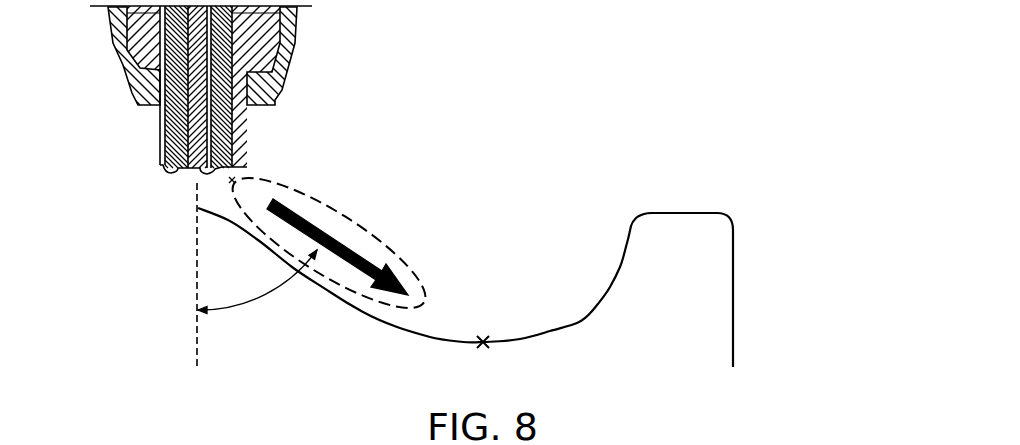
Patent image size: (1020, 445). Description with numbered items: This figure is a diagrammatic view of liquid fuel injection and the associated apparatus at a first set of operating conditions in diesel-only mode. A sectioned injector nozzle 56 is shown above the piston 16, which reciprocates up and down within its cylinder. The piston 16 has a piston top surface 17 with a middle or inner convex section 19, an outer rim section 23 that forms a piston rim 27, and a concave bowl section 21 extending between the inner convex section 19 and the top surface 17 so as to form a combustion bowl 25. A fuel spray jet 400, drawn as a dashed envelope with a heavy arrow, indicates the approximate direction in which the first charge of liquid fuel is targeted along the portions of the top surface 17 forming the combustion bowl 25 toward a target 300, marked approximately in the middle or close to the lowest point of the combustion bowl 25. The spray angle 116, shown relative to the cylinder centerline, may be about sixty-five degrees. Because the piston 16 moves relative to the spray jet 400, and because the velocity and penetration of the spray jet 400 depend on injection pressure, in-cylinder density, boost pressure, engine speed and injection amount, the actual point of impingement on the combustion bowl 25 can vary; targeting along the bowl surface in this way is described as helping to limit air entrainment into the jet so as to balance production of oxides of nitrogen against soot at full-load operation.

The nozzle assembly 56 is at (300, 87).
The inner convex section 19 is at (226, 215).
The concave bowl section 21 is at (518, 330).
The fuel spray jet 400 is at (364, 235).
The spray angle 116 is at (277, 294).
The target 300 is at (484, 362).
The combustion bowl 25 is at (571, 289).
The piston rim 27 is at (691, 252).
The outer rim section 23 is at (670, 204).
The piston top surface 17 is at (717, 213).
The piston 16 is at (733, 277).